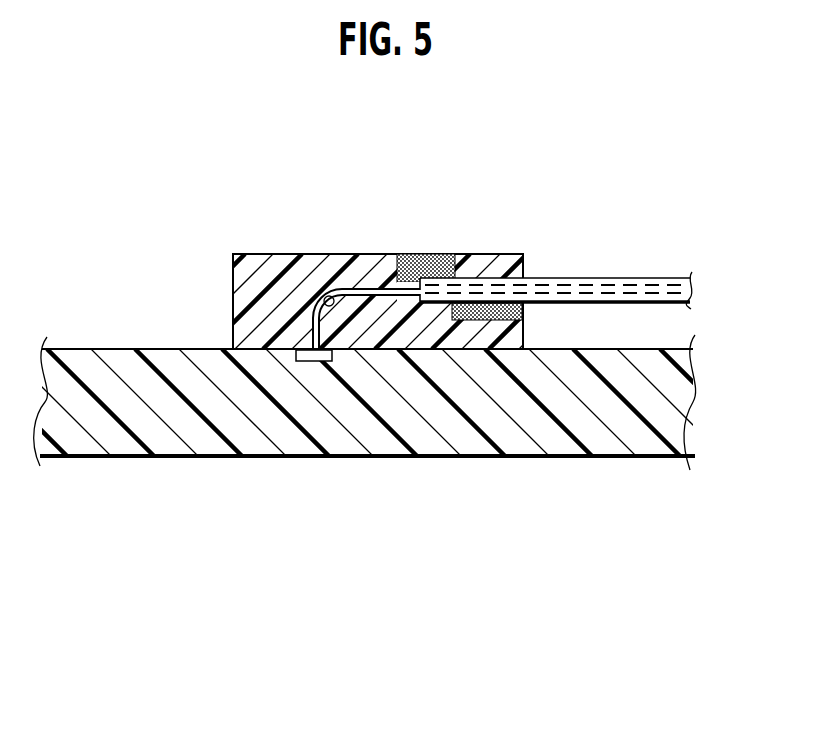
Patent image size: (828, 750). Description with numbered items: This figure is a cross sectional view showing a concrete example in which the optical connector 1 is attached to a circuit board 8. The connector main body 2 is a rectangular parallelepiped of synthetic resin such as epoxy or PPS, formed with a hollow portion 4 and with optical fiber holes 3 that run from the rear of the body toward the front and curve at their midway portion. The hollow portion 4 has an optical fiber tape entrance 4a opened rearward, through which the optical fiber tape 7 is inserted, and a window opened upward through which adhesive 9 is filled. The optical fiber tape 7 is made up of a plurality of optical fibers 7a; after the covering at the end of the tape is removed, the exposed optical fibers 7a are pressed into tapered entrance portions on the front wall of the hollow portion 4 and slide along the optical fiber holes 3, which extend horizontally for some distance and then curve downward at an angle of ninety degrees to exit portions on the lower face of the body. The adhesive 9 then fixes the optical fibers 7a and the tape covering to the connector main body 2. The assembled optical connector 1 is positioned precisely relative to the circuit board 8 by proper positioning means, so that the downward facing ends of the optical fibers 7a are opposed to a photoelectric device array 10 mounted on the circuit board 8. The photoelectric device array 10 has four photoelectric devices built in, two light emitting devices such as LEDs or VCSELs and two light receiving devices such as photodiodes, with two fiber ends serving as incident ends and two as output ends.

The optical connector 1 is at (481, 148).
The connector main body 2 is at (340, 254).
The optical fiber holes 3 is at (314, 315).
The hollow portion 4 is at (409, 256).
The optical fiber tape entrance 4a is at (488, 304).
The optical fiber tape 7 is at (603, 277).
The optical fibers 7a is at (324, 303).
The circuit board 8 is at (522, 440).
The adhesive 9 is at (441, 255).
The photoelectric device array 10 is at (312, 362).